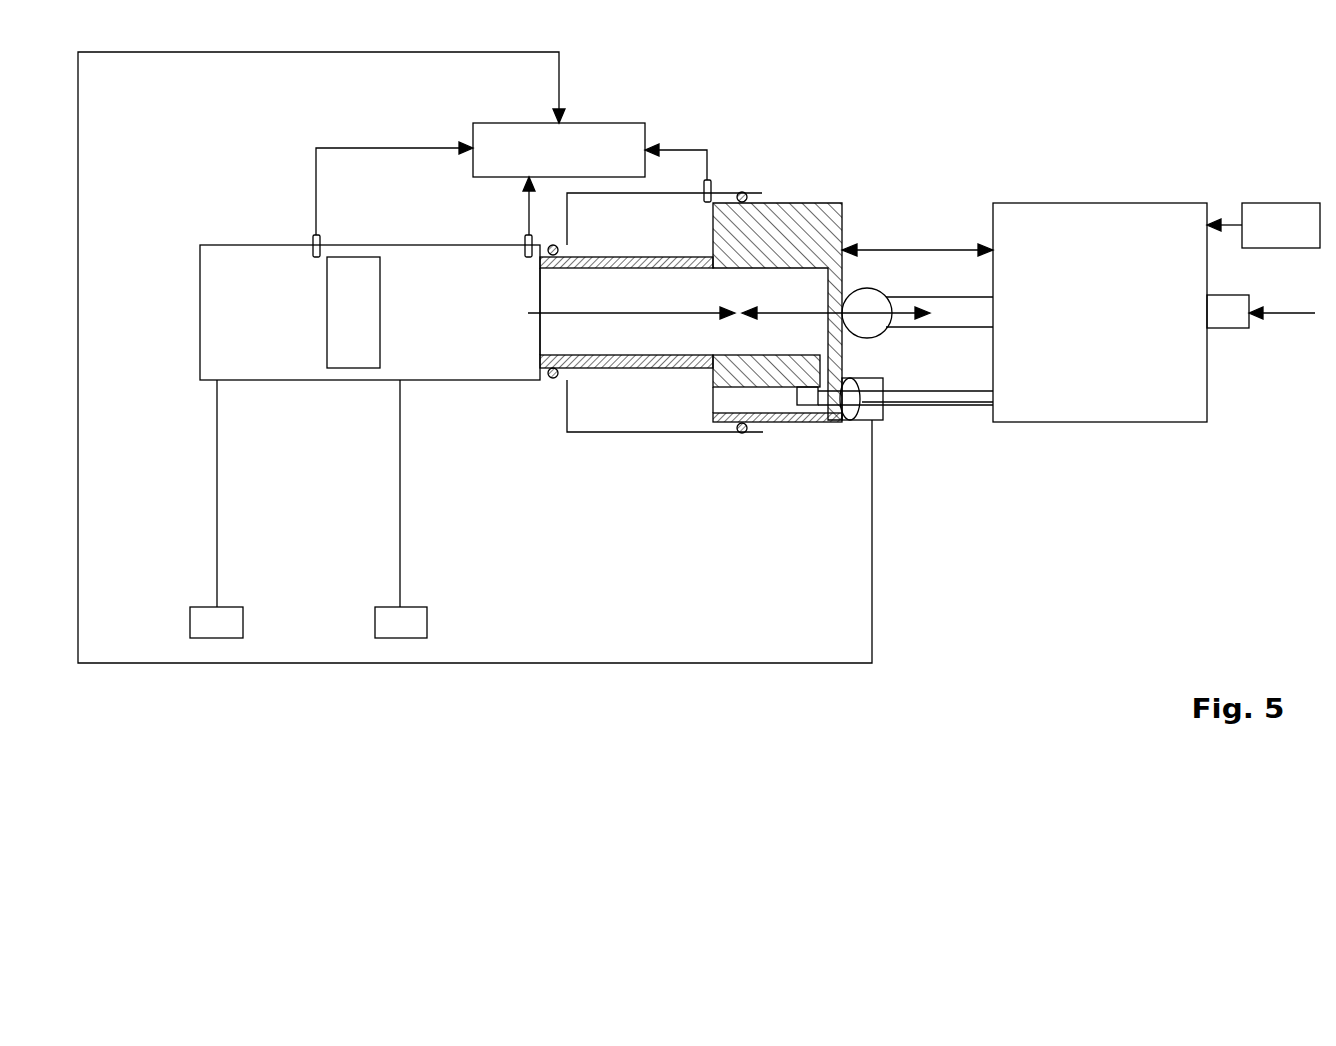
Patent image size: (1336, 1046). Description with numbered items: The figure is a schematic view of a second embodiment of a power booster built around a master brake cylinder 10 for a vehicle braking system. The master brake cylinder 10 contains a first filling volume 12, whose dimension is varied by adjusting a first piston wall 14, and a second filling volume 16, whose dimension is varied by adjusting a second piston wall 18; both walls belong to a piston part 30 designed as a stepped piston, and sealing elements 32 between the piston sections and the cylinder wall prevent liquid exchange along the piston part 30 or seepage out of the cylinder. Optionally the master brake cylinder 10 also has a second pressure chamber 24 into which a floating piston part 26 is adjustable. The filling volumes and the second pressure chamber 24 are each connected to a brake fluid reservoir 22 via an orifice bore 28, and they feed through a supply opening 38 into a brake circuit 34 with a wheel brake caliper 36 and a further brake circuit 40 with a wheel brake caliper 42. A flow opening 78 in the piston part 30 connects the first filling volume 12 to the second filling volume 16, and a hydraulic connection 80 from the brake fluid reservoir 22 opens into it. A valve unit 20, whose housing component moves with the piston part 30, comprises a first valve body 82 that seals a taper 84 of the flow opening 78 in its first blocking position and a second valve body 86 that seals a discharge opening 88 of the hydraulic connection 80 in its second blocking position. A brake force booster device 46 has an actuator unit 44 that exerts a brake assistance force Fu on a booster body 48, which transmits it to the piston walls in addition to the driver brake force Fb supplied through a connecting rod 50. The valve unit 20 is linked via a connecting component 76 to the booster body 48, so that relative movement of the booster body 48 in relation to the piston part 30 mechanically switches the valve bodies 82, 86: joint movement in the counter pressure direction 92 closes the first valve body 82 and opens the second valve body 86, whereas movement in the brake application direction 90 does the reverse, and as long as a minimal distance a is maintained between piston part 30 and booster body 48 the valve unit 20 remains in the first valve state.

The master brake cylinder 10 is at (172, 366).
The first filling volume 12 is at (450, 368).
The first piston wall 14 is at (828, 330).
The second filling volume 16 is at (600, 241).
The second piston wall 18 is at (713, 222).
The valve unit 20 is at (886, 420).
The brake fluid reservoir 22 is at (600, 122).
The second pressure chamber 24 is at (274, 370).
The floating piston part 26 is at (355, 368).
The orifice bore 28 is at (320, 238).
The piston part 30 is at (842, 215).
The sealing element 32 is at (553, 380).
The brake circuit 34 is at (421, 524).
The wheel brake caliper 36 is at (400, 638).
The supply opening 38 is at (405, 382).
The brake circuit 40 is at (238, 524).
The wheel brake caliper 42 is at (218, 638).
The actuator unit 44 is at (1278, 203).
The brake force booster device 46 is at (1120, 122).
The booster body 48 is at (1100, 422).
The connecting rod 50 is at (960, 330).
The connecting component 76 is at (962, 408).
The flow opening 78 is at (635, 313).
The hydraulic connection 80 is at (872, 490).
The first valve body 82 is at (807, 400).
The taper 84 is at (842, 364).
The second valve body 86 is at (862, 398).
The discharge opening 88 is at (836, 414).
The brake application direction 90 is at (790, 312).
The counter pressure direction 92 is at (882, 298).
The minimal distance a is at (922, 248).
The brake assistance force Fu is at (1235, 222).
The driver brake force Fb is at (1297, 320).